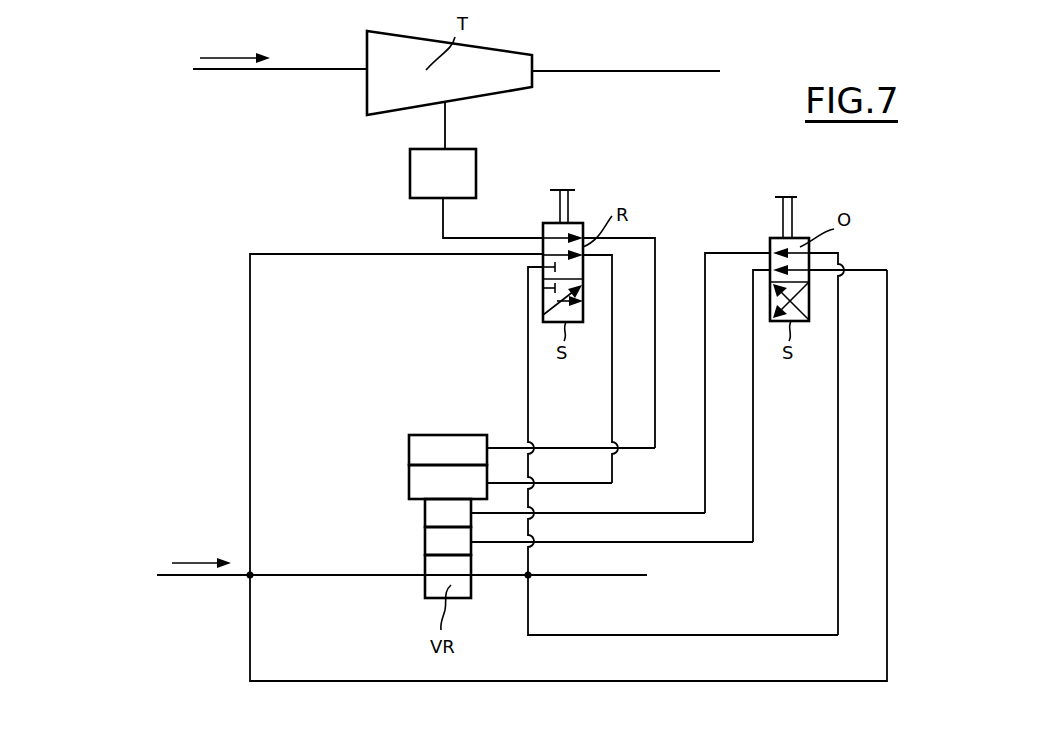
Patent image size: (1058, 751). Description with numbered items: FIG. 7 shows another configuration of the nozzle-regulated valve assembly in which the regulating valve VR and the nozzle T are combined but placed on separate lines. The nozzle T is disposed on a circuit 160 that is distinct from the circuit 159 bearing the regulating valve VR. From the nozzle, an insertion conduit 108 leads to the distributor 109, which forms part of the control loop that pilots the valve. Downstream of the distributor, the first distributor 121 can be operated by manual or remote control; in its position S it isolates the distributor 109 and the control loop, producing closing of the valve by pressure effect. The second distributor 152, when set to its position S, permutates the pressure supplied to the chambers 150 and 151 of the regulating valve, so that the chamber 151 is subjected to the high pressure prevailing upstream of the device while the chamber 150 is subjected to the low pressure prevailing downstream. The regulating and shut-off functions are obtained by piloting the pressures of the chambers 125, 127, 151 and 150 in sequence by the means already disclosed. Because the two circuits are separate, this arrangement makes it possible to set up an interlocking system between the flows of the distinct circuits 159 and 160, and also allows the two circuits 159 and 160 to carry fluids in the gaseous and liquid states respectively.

The circuit 160 is at (330, 70).
The insertion conduit 108 is at (466, 108).
The distributor 109 is at (462, 182).
The first distributor 121 is at (563, 195).
The second distributor 152 is at (787, 197).
The chamber 127 is at (466, 463).
The chamber 125 is at (466, 495).
The chamber 151 is at (464, 525).
The chamber 150 is at (464, 553).
The circuit 159 is at (349, 574).